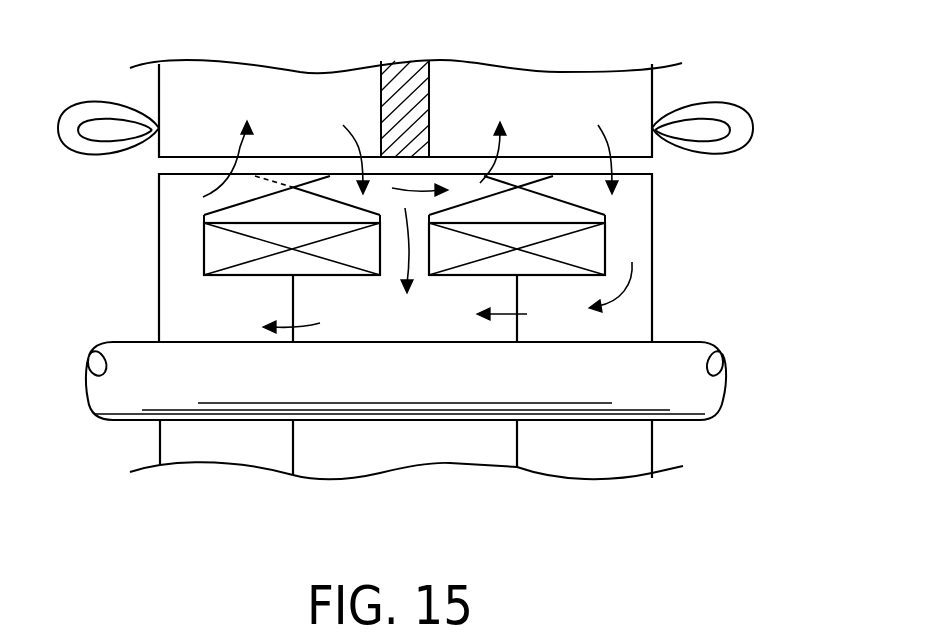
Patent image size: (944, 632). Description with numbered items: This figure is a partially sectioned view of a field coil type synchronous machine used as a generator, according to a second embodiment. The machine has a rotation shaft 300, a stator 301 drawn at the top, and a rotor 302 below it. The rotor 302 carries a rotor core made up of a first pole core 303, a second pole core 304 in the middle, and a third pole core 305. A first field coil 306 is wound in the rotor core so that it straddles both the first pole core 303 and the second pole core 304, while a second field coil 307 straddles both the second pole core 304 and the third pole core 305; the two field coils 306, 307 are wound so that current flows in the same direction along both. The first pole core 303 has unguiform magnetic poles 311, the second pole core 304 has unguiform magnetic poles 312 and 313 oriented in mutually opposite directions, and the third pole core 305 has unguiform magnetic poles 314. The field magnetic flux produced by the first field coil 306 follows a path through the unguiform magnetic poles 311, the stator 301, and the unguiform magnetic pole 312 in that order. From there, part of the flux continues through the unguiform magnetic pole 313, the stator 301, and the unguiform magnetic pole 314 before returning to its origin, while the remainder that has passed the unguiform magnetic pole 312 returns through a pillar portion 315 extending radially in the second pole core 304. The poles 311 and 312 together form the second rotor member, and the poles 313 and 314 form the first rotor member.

The rotation shaft 300 is at (128, 410).
The stator 301 is at (352, 92).
The rotor 302 is at (152, 215).
The first pole core 303 is at (178, 296).
The second pole core 304 is at (405, 300).
The third pole core 305 is at (653, 287).
The first field coil 306 is at (218, 250).
The second field coil 307 is at (597, 240).
The unguiform magnetic poles 311 is at (293, 176).
The unguiform magnetic pole 312 is at (337, 185).
The unguiform magnetic pole 313 is at (461, 185).
The unguiform magnetic pole 314 is at (578, 185).
The pillar portion 315 is at (390, 248).